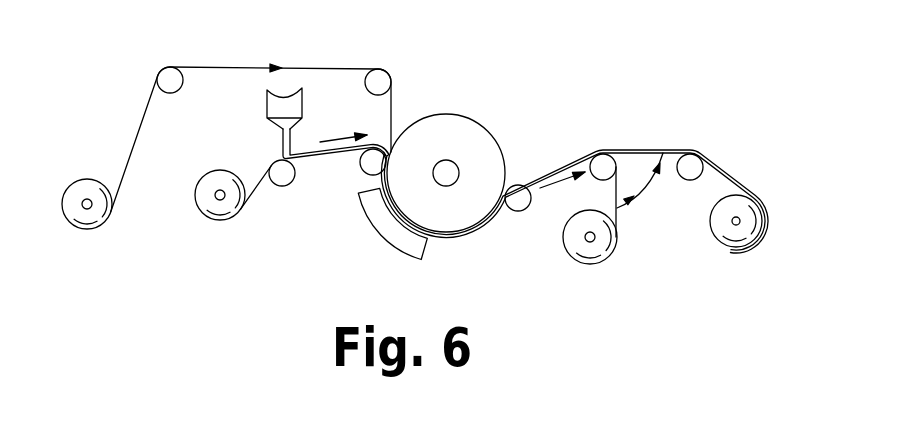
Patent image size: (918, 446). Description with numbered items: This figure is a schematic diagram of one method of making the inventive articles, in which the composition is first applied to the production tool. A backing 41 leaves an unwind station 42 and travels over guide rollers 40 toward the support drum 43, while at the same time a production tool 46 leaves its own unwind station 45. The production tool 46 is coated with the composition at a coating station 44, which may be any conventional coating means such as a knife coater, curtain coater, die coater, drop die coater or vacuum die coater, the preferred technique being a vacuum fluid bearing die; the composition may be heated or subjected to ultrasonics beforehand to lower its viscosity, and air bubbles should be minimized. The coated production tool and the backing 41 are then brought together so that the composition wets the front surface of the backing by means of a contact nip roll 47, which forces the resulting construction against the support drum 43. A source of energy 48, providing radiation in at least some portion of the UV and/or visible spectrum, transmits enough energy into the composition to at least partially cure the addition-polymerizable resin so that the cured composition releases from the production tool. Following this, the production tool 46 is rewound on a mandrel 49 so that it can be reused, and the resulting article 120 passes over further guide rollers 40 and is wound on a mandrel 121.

The guide roller 40 is at (170, 93).
The backing 41 is at (133, 148).
The unwind station 42 is at (67, 208).
The support drum 43 is at (455, 123).
The coating station 44 is at (266, 109).
The unwind station 45 is at (200, 203).
The production tool 46 is at (252, 182).
The contact nip roll 47 is at (362, 163).
The source of energy 48 is at (392, 233).
The mandrel 49 is at (572, 240).
The article 120 is at (628, 150).
The mandrel 121 is at (717, 224).